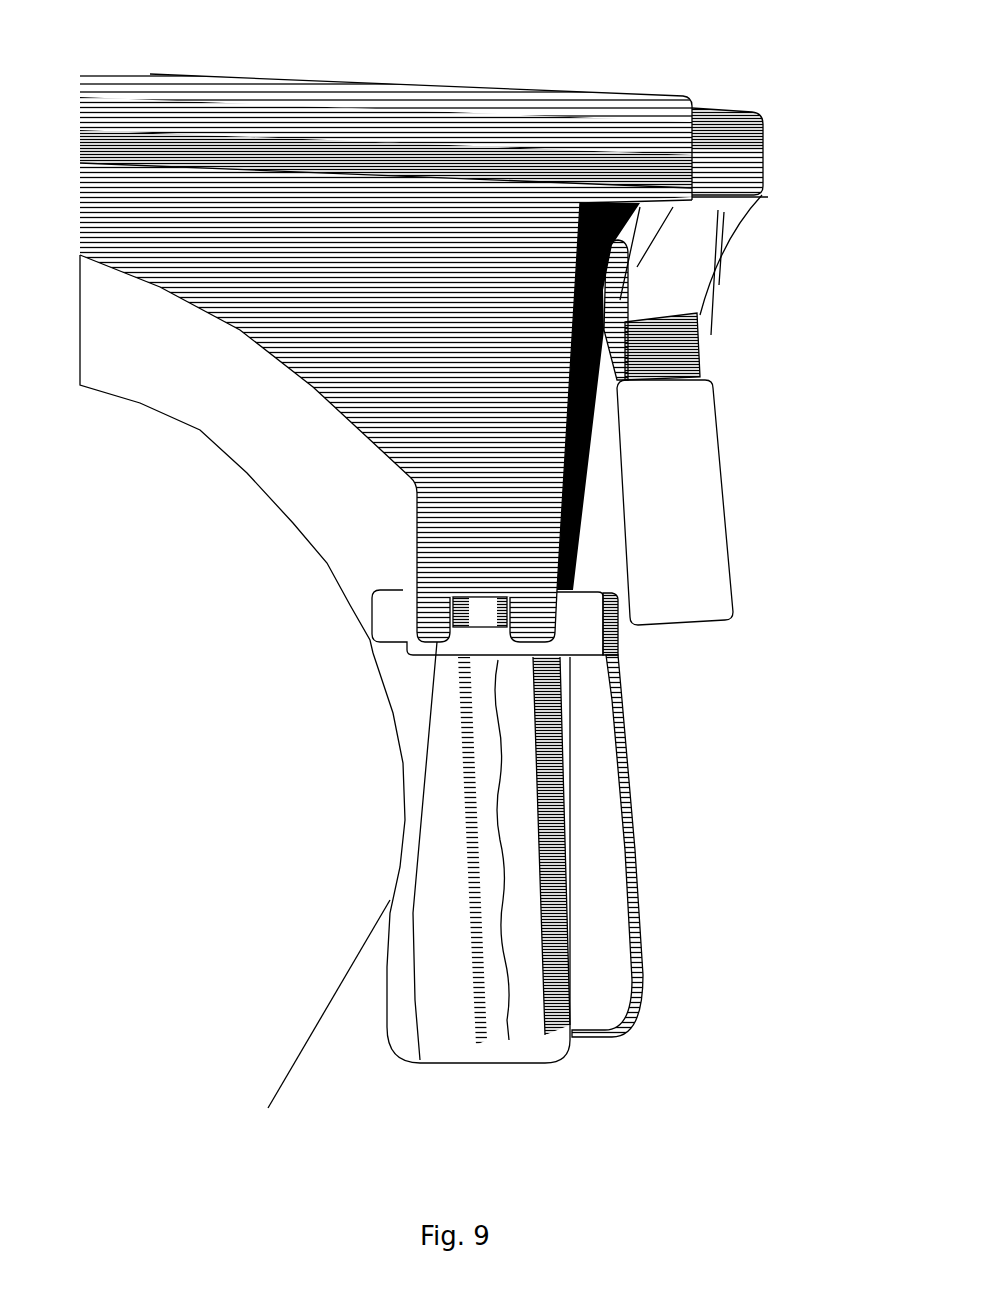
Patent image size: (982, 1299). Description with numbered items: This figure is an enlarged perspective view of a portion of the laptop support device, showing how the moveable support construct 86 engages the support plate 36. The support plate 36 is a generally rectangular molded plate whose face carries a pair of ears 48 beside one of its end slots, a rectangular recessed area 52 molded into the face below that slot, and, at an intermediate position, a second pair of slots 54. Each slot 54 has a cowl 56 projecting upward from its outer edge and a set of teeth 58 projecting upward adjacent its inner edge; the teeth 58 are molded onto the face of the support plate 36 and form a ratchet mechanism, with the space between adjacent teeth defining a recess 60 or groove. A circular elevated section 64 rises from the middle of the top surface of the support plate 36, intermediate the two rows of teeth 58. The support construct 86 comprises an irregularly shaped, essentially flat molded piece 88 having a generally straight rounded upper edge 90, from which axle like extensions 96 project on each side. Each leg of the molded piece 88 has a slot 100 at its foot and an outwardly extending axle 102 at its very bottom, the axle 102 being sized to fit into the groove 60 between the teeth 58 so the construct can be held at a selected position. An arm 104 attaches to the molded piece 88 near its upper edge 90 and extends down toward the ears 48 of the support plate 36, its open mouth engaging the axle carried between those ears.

The moveable support construct 86 is at (475, 83).
The rounded upper edge 90 is at (166, 103).
The axle like extensions 96 is at (598, 88).
The arm 104 is at (723, 247).
The ears 48 is at (727, 283).
The molded piece 88 is at (593, 493).
The support plate 36 is at (727, 480).
The rectangular recessed area 52 is at (720, 425).
The slot 100 is at (462, 602).
The cowl 56 is at (617, 683).
The slots 54 is at (553, 780).
The teeth 58 is at (500, 910).
The recess 60 is at (497, 848).
The circular elevated section 64 is at (358, 993).
The axle 102 is at (420, 1060).